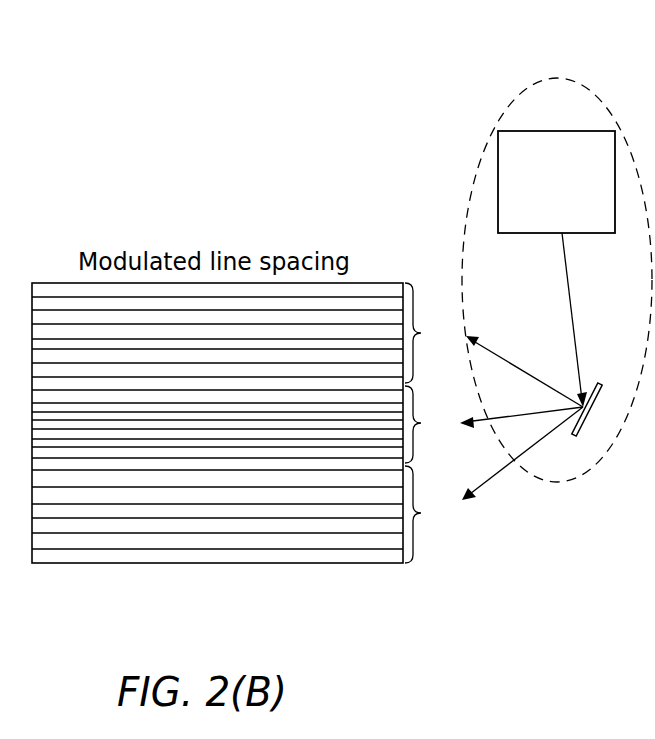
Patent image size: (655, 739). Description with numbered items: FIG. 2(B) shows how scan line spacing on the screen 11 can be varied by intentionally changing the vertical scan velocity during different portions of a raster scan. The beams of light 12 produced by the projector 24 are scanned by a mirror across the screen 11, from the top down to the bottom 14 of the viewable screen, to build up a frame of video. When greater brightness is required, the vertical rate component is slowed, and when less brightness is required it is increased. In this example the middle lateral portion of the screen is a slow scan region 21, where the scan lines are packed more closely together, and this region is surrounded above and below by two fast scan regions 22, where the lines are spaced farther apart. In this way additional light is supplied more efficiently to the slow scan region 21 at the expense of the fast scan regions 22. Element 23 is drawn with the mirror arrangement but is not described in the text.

The screen 11 is at (117, 533).
The bottom of the viewable screen 14 is at (335, 565).
The beams of light 12 is at (568, 310).
The slow scan region 21 is at (282, 424).
The fast scan regions 22 is at (282, 423).
The scanning mirror 23 is at (583, 436).
The projector 24 is at (475, 173).